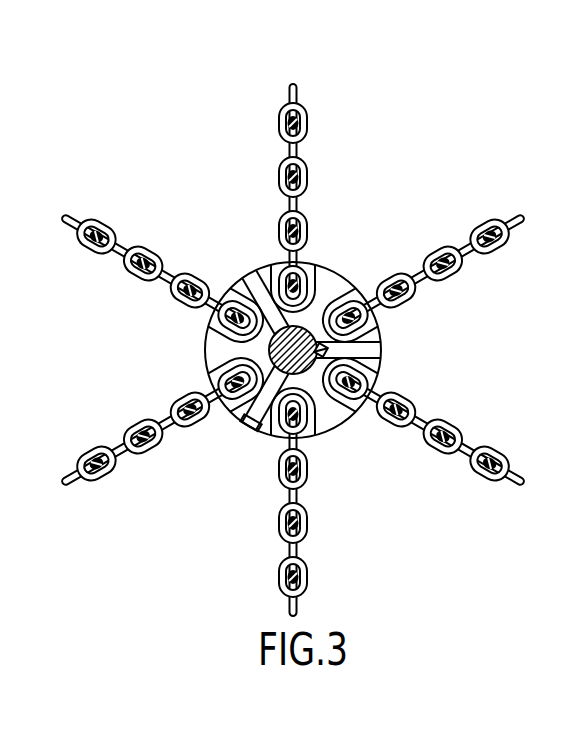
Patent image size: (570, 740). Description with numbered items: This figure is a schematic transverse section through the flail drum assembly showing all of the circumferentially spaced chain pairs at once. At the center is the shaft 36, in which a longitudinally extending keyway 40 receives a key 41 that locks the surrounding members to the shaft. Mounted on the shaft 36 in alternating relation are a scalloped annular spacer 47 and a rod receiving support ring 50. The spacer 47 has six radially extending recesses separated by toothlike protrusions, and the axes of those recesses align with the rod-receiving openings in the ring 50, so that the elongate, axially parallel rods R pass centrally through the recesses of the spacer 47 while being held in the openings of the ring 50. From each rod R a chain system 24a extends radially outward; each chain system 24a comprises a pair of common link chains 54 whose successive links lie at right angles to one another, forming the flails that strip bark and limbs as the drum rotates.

The chain system 24a is at (324, 118).
The central shaft 36 is at (268, 318).
The keyway 40 is at (310, 334).
The key 41 is at (326, 350).
The scalloped annular spacer 47 is at (256, 418).
The rod receiving support ring 50 is at (205, 357).
The common link chain 54 is at (303, 220).
The rod R is at (215, 335).